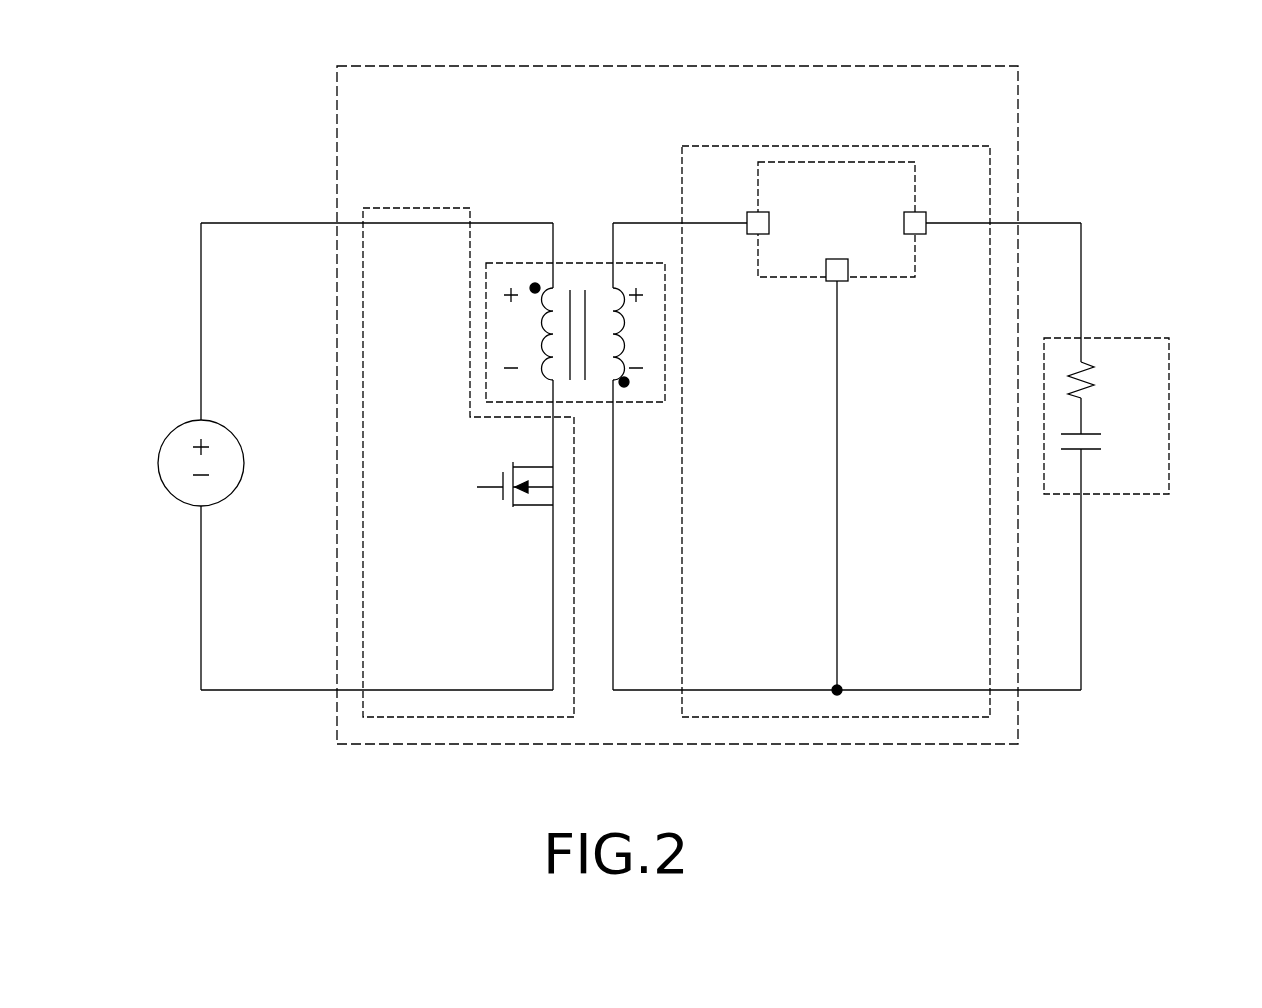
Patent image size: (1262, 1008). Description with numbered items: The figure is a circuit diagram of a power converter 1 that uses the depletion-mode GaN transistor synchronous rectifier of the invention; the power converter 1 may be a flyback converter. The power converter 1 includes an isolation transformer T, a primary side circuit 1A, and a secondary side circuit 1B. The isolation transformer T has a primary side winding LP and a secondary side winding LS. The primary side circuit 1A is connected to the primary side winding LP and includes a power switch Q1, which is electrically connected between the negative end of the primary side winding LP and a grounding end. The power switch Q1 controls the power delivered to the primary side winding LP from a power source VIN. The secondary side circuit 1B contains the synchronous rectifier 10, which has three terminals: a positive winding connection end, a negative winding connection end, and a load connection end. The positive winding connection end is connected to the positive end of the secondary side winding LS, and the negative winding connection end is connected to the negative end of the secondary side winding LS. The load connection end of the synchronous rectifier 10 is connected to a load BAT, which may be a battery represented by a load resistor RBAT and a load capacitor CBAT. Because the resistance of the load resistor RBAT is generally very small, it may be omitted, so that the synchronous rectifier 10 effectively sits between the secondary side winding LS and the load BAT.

The power converter 1 is at (1018, 93).
The primary side circuit 1A is at (417, 208).
The secondary side circuit 1B is at (742, 146).
The synchronous rectifier 10 is at (838, 162).
The isolation transformer T is at (575, 287).
The primary side winding LP is at (528, 331).
The secondary side winding LS is at (634, 337).
The power switch Q1 is at (515, 504).
The power source VIN is at (176, 456).
The load BAT is at (1136, 456).
The load resistor RBAT is at (1111, 383).
The load capacitor CBAT is at (1108, 458).